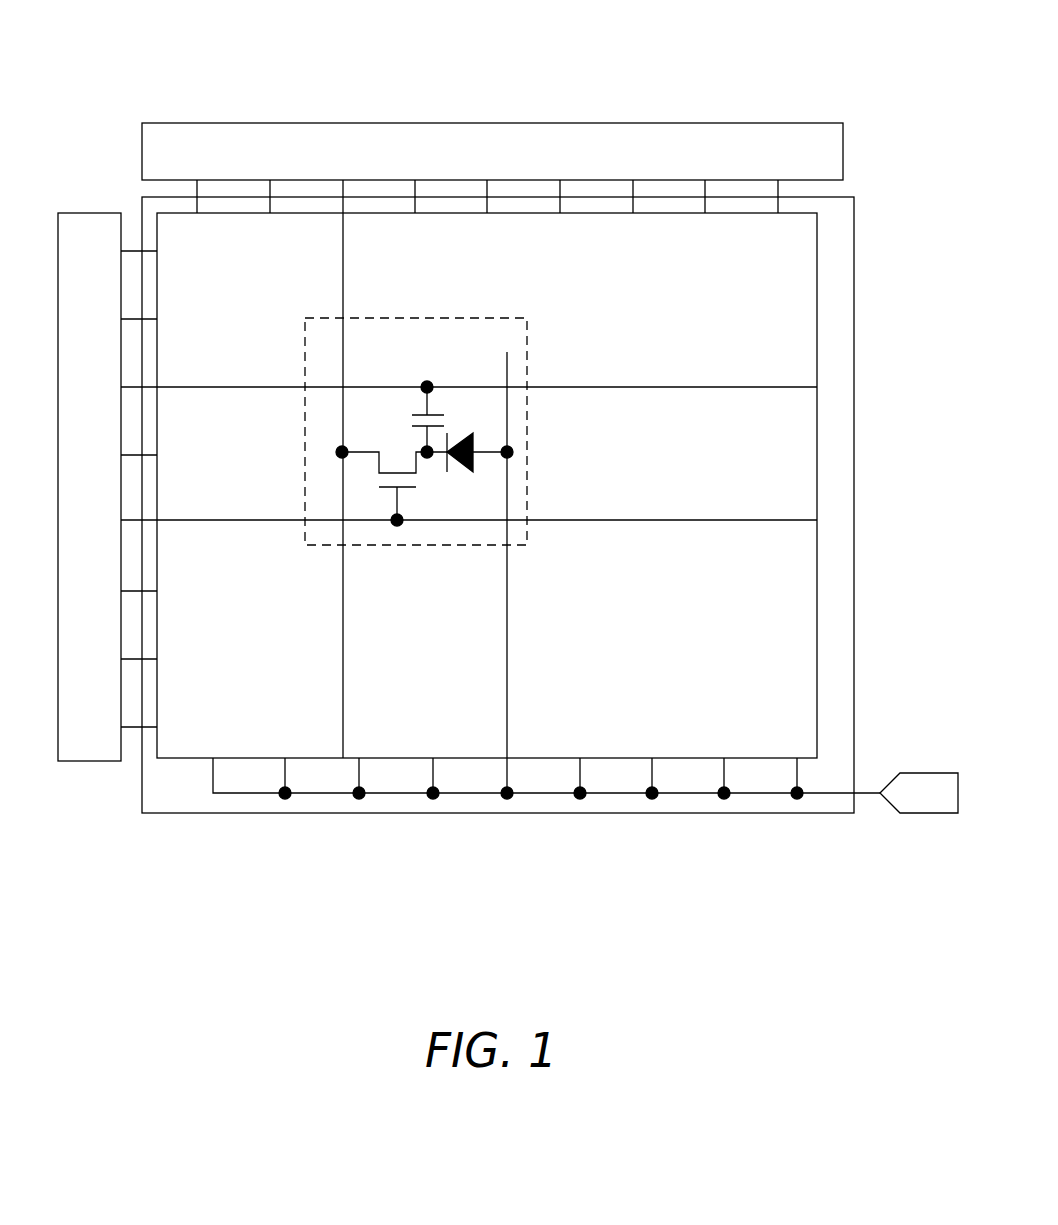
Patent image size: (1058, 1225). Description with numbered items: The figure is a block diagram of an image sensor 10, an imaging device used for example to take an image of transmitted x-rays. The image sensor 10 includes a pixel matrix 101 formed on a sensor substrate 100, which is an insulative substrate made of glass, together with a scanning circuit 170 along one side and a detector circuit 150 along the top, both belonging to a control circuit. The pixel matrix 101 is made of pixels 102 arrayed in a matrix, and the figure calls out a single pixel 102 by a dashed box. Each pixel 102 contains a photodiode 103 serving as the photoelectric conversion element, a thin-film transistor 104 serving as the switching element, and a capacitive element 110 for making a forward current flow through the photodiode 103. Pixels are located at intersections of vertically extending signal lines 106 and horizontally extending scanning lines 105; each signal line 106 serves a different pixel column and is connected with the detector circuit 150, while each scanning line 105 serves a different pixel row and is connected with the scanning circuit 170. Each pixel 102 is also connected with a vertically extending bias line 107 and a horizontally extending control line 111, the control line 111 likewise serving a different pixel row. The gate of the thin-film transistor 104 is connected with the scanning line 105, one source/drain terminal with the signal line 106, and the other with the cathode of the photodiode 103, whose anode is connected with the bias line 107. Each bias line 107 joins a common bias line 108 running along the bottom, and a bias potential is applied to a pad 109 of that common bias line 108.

The image sensor 10 is at (765, 64).
The sensor substrate 100 is at (855, 368).
The pixel matrix 101 is at (818, 268).
The pixel 102 is at (368, 318).
The photodiode 103 is at (475, 447).
The thin-film transistor 104 is at (363, 448).
The scanning line 105 is at (663, 520).
The signal line 106 is at (342, 613).
The bias line 107 is at (510, 623).
The common bias line 108 is at (833, 792).
The pad 109 is at (930, 813).
The capacitive element 110 is at (440, 413).
The control line 111 is at (563, 387).
The detector circuit 150 is at (440, 122).
The scanning circuit 170 is at (100, 762).